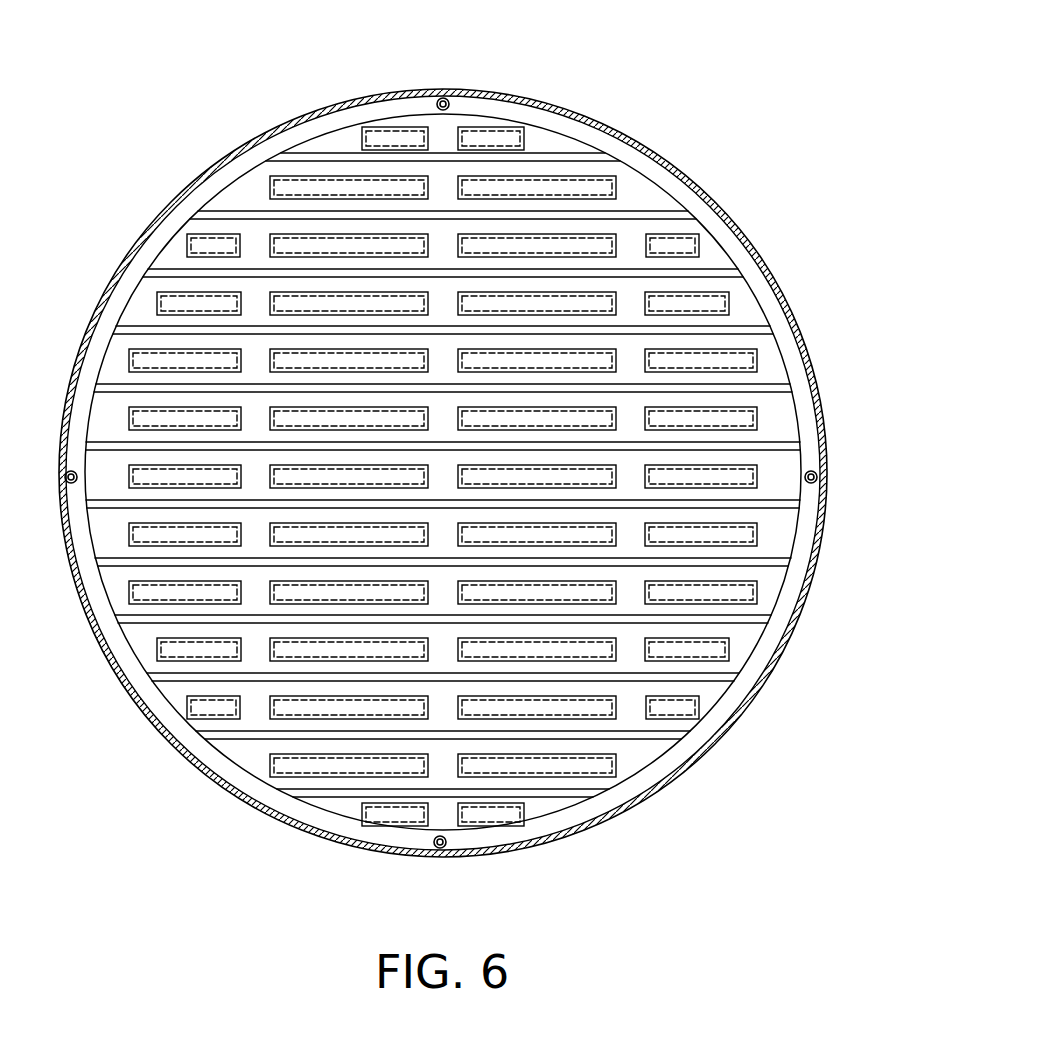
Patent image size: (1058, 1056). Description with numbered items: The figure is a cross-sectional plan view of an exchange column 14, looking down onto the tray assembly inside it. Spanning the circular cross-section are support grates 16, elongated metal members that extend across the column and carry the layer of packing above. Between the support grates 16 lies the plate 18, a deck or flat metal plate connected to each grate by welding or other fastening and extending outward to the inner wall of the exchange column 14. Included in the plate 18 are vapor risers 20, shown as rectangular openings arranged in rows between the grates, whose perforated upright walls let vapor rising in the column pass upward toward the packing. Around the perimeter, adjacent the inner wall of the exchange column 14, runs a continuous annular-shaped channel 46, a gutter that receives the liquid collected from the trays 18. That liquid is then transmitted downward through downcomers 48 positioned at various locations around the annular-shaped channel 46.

The exchange column 14 is at (690, 183).
The support grates 16 is at (742, 273).
The plate 18 is at (780, 533).
The vapor riser 20 is at (780, 421).
The annular-shaped channel 46 is at (318, 127).
The downcomers 48 is at (450, 94).